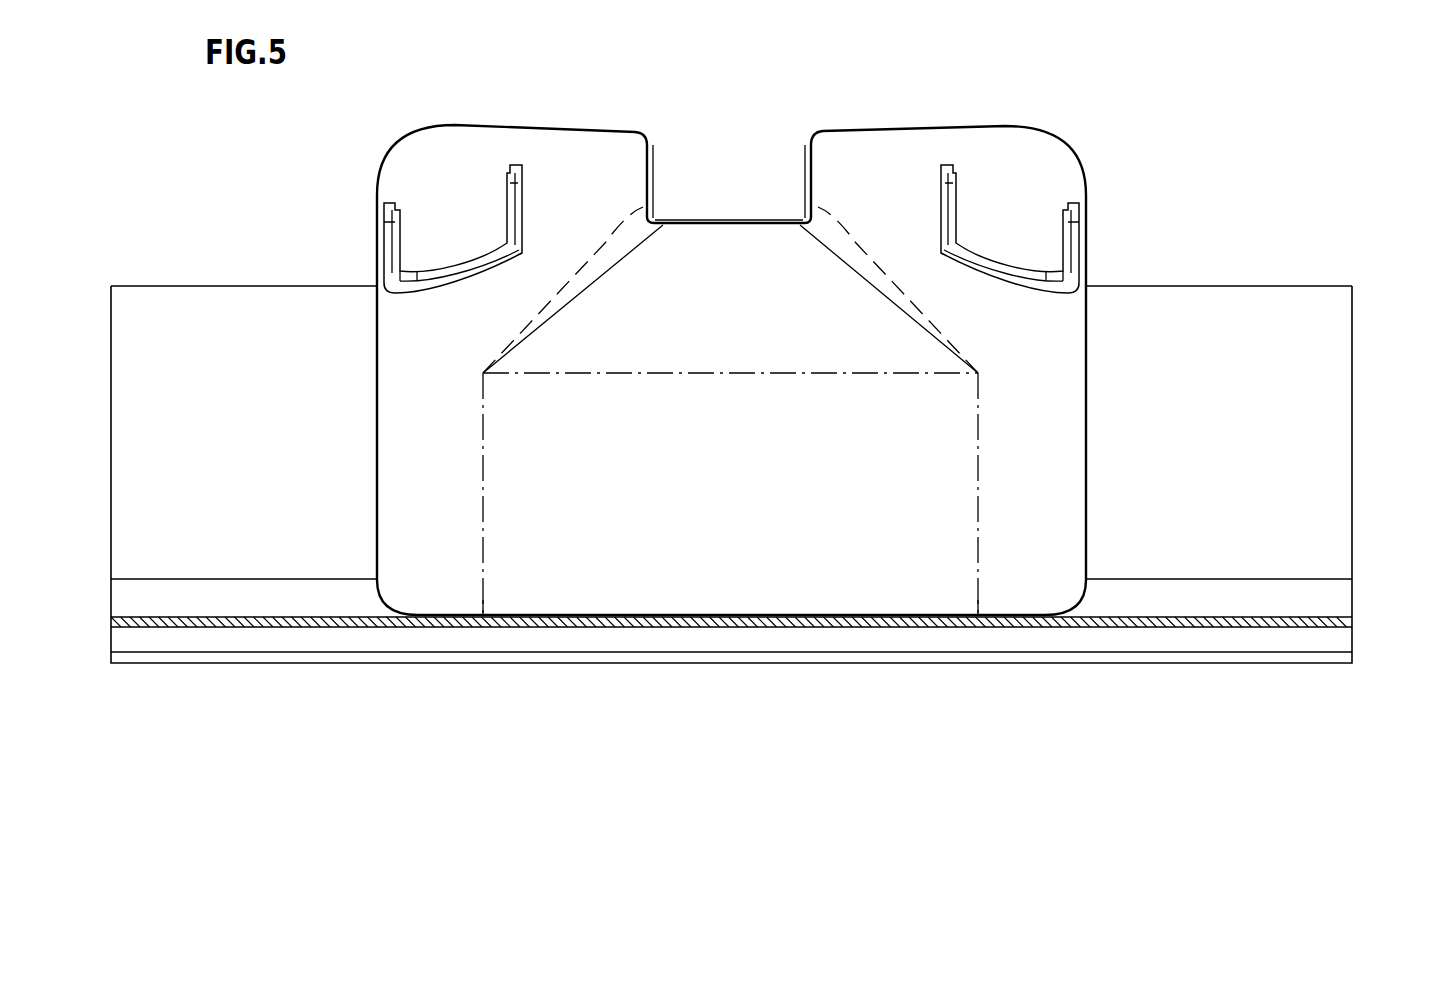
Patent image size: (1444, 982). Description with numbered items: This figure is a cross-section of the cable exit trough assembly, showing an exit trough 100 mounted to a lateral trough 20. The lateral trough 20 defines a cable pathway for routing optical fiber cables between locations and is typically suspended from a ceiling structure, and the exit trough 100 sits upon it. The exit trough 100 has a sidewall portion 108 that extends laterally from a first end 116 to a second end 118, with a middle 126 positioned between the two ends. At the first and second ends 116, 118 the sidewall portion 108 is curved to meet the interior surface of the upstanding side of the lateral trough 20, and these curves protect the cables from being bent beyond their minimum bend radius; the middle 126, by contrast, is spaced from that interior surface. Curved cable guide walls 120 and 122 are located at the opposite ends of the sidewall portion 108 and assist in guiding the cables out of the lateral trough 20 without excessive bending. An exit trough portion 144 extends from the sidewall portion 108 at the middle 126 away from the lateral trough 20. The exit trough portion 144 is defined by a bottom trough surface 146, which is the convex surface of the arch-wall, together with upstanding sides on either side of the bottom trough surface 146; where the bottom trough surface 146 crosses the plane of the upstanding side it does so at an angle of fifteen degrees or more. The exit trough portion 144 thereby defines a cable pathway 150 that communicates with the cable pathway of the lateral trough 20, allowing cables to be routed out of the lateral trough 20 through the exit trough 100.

The lateral trough 20 is at (1362, 602).
The exit trough 100 is at (1068, 112).
The sidewall portion 108 is at (748, 471).
The first end 116 is at (375, 483).
The second end 118 is at (1086, 478).
The curved cable guide wall 120 is at (443, 283).
The curved cable guide wall 122 is at (997, 275).
The middle 126 is at (748, 545).
The exit trough portion 144 is at (812, 160).
The bottom trough surface 146 is at (748, 303).
The cable pathway 150 is at (748, 192).